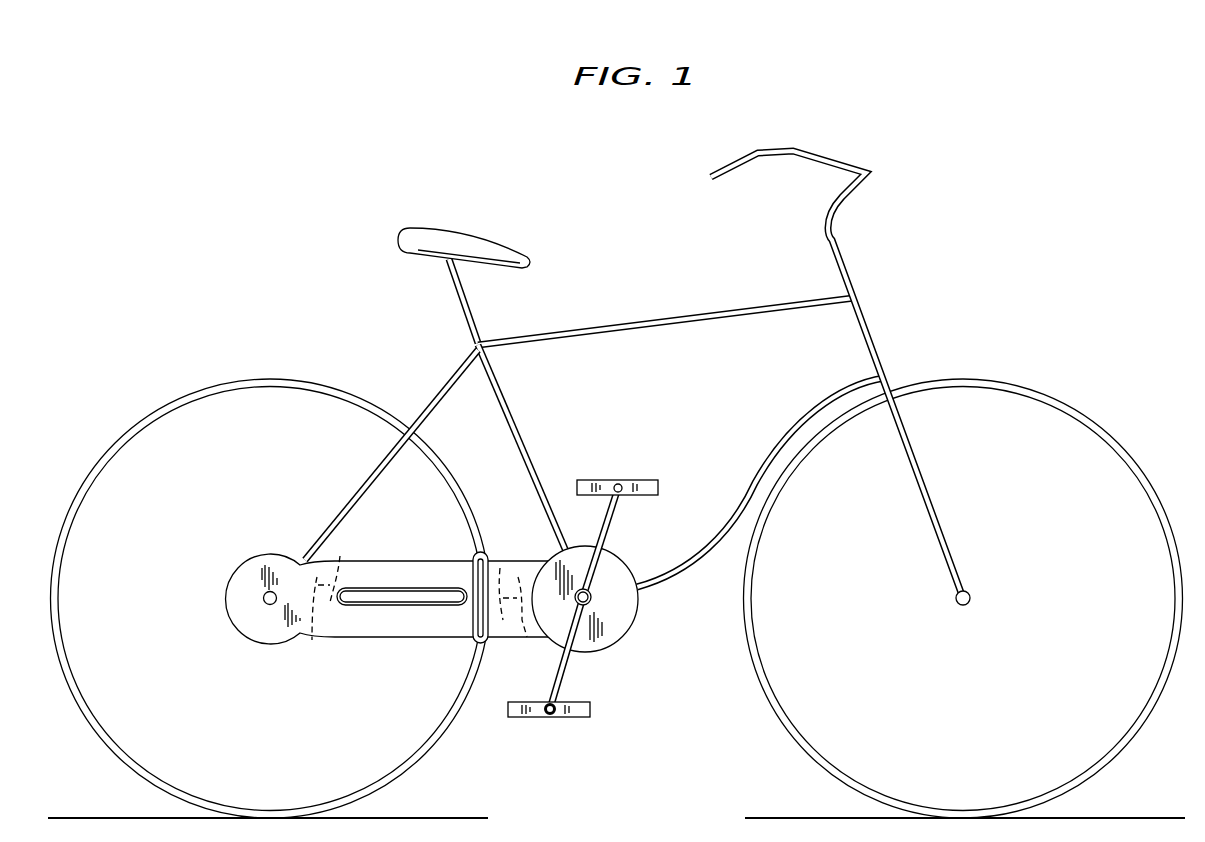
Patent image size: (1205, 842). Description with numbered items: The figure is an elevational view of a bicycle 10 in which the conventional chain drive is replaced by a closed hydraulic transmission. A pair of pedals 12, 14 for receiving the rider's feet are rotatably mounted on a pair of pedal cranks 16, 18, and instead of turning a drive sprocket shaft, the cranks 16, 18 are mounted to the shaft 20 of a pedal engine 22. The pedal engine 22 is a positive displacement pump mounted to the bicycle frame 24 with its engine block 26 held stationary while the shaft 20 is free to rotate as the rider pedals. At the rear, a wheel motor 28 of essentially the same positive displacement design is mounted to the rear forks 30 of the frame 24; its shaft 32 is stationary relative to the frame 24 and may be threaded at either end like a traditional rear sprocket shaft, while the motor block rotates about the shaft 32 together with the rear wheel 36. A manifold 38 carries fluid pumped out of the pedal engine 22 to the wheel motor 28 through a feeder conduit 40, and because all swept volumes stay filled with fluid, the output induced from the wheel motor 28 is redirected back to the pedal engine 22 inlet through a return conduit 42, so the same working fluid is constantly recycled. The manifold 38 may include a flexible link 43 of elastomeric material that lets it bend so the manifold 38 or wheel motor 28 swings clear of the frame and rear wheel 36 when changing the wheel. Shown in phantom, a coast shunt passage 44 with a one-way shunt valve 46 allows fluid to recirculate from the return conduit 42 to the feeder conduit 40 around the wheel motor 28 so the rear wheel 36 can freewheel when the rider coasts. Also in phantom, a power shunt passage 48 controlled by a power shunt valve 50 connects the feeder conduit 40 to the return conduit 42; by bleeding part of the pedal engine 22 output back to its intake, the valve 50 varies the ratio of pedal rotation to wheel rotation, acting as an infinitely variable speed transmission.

The bicycle 10 is at (918, 313).
The pedal 12 is at (576, 718).
The pedal 14 is at (641, 487).
The pedal crank 16 is at (563, 671).
The pedal crank 18 is at (612, 516).
The shaft 20 is at (592, 606).
The pedal engine 22 is at (654, 609).
The bicycle frame 24 is at (785, 285).
The engine block 26 is at (617, 573).
The wheel motor 28 is at (266, 657).
The rear forks 30 is at (351, 504).
The shaft 32 is at (263, 599).
The rear wheel 36 is at (212, 377).
The manifold 38 is at (431, 652).
The feeder conduit 40 is at (381, 620).
The return conduit 42 is at (416, 570).
The flexible link 43 is at (487, 660).
The coast shunt passage 44 is at (340, 578).
The one-way shunt valve 46 is at (312, 640).
The power shunt passage 48 is at (500, 568).
The power shunt valve 50 is at (527, 637).